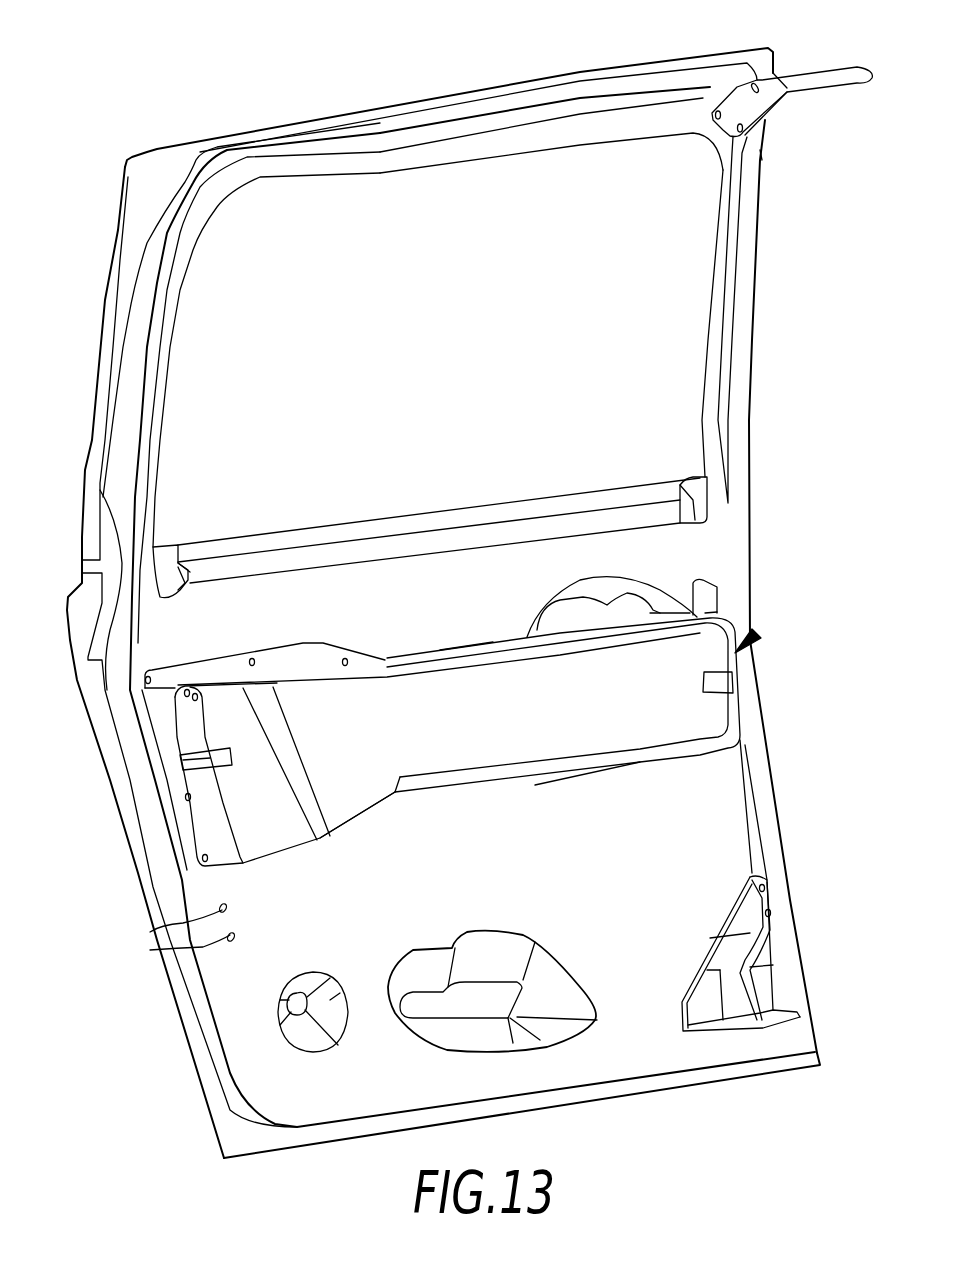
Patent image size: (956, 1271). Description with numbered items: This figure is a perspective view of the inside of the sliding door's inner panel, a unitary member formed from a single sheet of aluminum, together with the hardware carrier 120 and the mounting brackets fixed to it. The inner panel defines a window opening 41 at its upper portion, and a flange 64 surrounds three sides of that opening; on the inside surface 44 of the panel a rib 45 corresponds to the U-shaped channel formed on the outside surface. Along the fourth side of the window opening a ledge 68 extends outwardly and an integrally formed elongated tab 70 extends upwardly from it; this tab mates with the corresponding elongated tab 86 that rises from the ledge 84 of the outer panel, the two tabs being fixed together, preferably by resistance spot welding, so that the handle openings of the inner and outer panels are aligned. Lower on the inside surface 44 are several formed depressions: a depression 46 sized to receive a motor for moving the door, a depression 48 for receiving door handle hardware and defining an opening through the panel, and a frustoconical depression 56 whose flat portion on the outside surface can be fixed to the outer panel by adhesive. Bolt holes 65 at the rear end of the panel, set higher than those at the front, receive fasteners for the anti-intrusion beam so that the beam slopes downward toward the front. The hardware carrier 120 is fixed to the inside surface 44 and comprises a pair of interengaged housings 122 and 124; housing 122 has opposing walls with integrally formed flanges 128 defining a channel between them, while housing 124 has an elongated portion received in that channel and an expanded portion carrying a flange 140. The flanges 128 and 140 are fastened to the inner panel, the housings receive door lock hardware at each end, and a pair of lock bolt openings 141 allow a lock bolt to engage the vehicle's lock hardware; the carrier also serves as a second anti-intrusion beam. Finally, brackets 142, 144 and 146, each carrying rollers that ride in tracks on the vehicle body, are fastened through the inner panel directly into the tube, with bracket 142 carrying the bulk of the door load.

The window opening 41 is at (672, 340).
The inside surface 44 is at (419, 606).
The rib 45 is at (130, 350).
The depression 46 is at (578, 968).
The depression 48 is at (677, 595).
The depression 56 is at (333, 995).
The flange 64 is at (163, 345).
The bolt holes 65 is at (150, 940).
The ledge 68 is at (522, 530).
The elongated tab 70 is at (405, 525).
The ledge 84 is at (182, 580).
The elongated tab 86 is at (165, 547).
The hardware carrier 120 is at (753, 634).
The housing 122 is at (640, 730).
The housing 124 is at (323, 828).
The flanges 128 is at (495, 641).
The flange 140 is at (207, 663).
The lock bolt openings 141 is at (180, 762).
The bracket 142 is at (830, 73).
The bracket 144 is at (758, 988).
The bracket 146 is at (105, 532).